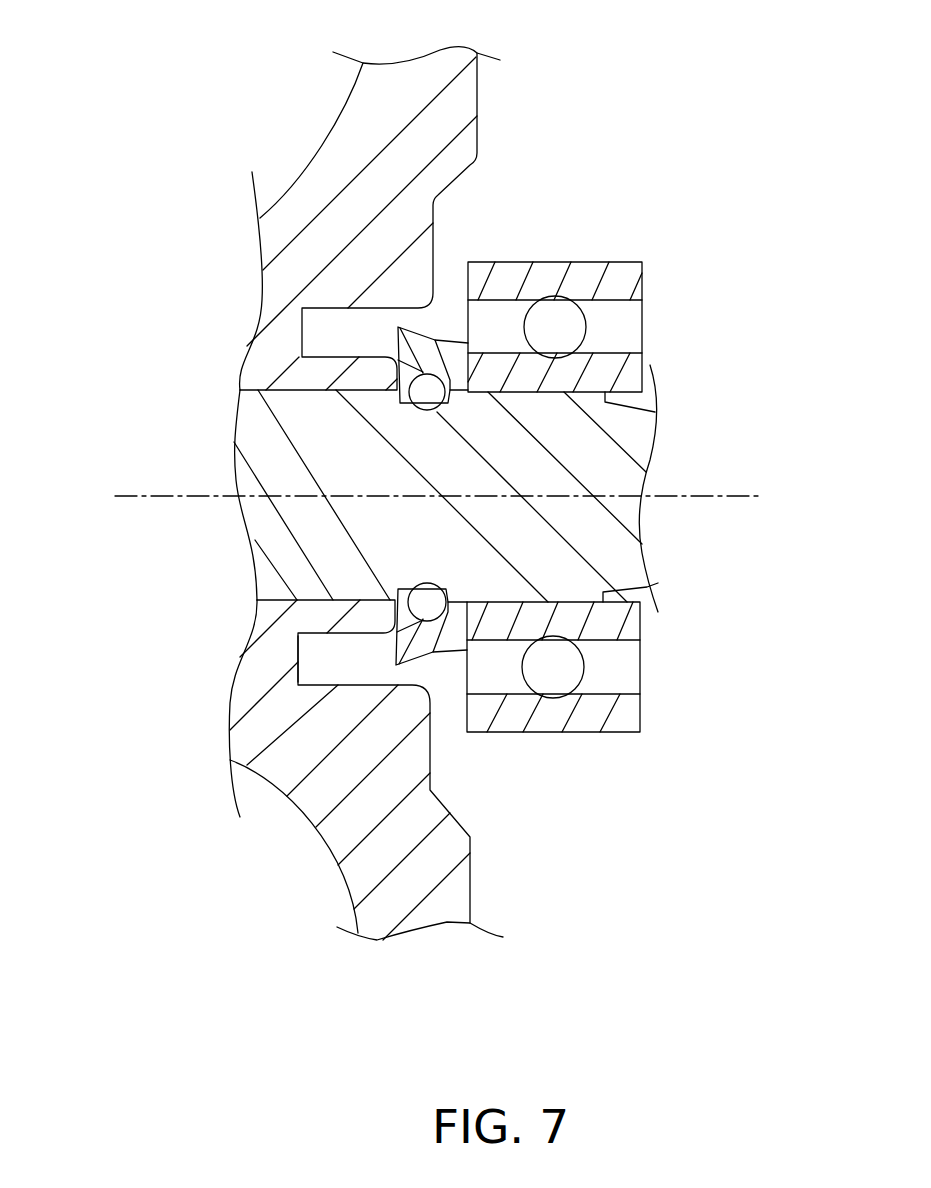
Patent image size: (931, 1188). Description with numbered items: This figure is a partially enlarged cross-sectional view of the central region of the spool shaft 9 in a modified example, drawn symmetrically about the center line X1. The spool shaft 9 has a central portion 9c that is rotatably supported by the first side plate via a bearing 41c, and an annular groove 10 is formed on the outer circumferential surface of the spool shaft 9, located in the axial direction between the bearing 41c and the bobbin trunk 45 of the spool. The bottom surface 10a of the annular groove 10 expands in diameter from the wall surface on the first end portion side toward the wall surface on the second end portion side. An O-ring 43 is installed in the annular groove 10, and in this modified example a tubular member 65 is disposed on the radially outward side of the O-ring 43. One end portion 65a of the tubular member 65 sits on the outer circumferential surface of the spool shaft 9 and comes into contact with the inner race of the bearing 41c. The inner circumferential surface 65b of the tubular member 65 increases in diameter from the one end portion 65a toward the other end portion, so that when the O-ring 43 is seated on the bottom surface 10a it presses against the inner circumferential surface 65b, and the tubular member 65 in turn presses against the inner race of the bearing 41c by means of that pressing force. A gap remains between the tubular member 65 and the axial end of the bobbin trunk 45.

The bobbin trunk 45 is at (313, 282).
The tubular member 65 is at (442, 326).
The one end portion 65a is at (463, 367).
The inner circumferential surface 65b is at (420, 405).
The bearing 41c is at (640, 278).
The O-ring 43 is at (440, 410).
The spool shaft 9 is at (273, 575).
The central portion 9c is at (568, 583).
The annular groove 10 is at (432, 632).
The bottom surface 10a is at (300, 638).
The central axis X1 is at (440, 496).